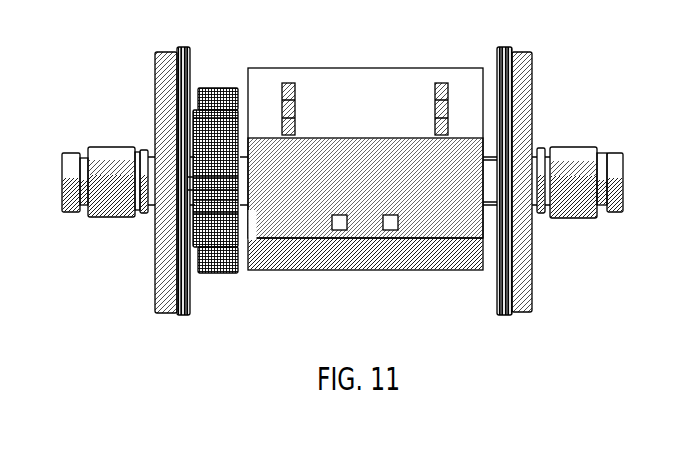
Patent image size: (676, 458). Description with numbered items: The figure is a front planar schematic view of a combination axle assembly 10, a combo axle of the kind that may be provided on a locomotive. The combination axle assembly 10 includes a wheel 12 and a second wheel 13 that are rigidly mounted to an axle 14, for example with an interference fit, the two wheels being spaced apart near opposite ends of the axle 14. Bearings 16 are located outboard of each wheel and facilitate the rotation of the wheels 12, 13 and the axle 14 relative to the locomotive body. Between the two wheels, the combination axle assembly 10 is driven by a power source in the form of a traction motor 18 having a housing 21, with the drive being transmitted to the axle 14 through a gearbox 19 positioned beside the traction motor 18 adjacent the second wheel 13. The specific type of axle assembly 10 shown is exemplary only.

The combination axle assembly 10 is at (572, 45).
The wheel 12 is at (512, 315).
The second wheel 13 is at (162, 313).
The axle 14 is at (493, 210).
The bearings 16 is at (108, 147).
The traction motor 18 is at (290, 270).
The gearbox 19 is at (222, 88).
The housing 21 is at (373, 179).